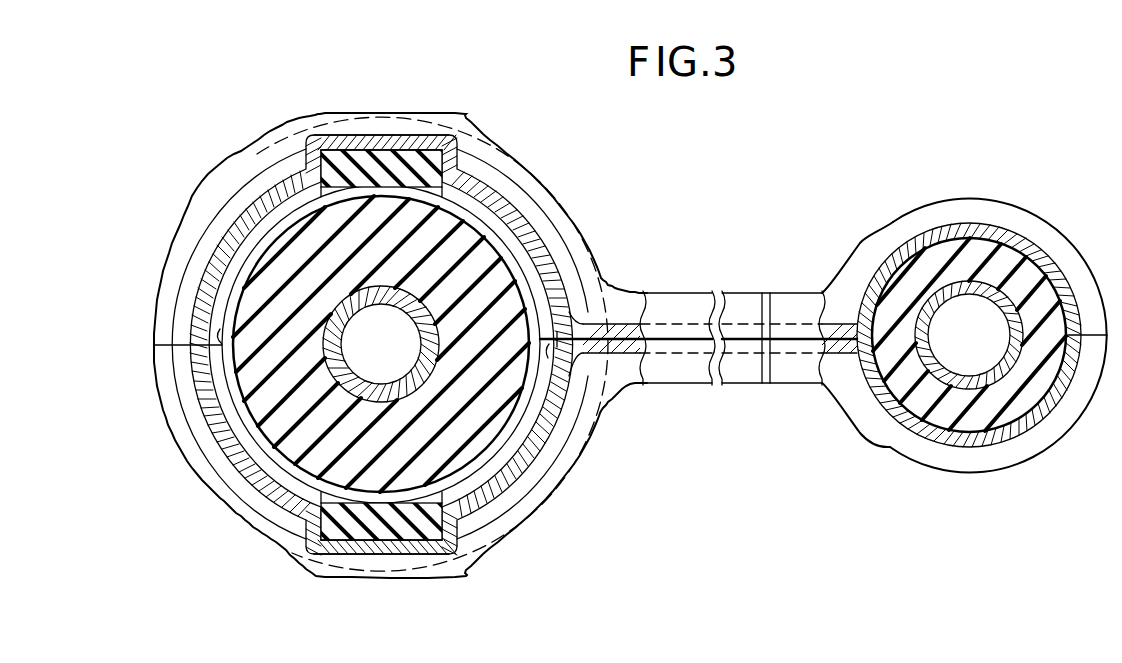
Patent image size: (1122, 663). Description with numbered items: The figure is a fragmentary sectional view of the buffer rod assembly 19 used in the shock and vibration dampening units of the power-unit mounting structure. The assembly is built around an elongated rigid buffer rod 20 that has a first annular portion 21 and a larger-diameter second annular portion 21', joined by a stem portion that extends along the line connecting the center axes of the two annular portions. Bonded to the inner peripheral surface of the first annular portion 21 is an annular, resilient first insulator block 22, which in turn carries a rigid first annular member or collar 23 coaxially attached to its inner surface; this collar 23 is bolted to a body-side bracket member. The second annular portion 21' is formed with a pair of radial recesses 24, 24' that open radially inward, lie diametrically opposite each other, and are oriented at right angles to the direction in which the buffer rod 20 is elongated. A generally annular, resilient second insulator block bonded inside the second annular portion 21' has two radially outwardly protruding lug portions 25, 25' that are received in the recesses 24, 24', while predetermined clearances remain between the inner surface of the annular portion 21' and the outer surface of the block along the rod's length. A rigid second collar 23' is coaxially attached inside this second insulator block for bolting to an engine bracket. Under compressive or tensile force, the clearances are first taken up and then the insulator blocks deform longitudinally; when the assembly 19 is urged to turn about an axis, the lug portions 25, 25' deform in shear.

The buffer rod assembly 19 is at (750, 291).
The buffer rod 20 is at (672, 292).
The first annular portion 21 is at (960, 329).
The second annular portion 21' is at (400, 345).
The first insulator block 22 is at (467, 205).
The first annular member or collar 23 is at (969, 334).
The second annular member or collar 23' is at (381, 344).
The radial recess 24 is at (385, 140).
The radial recess 24' is at (382, 547).
The lug portion 25 is at (381, 116).
The lug portion 25' is at (381, 571).